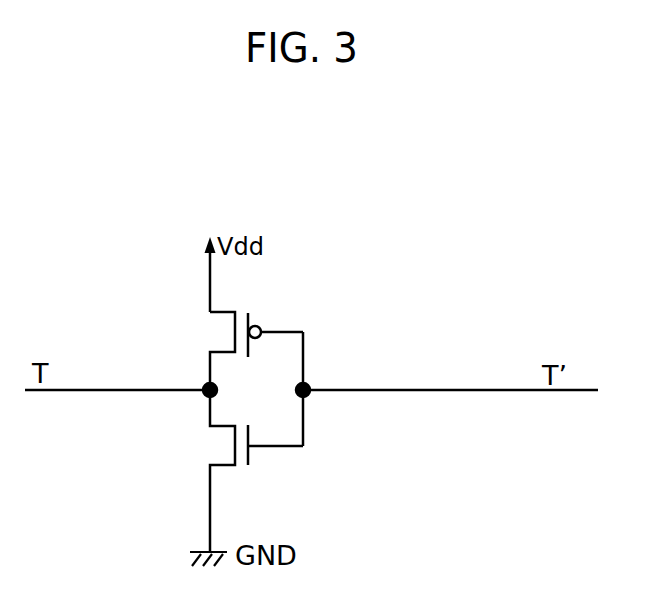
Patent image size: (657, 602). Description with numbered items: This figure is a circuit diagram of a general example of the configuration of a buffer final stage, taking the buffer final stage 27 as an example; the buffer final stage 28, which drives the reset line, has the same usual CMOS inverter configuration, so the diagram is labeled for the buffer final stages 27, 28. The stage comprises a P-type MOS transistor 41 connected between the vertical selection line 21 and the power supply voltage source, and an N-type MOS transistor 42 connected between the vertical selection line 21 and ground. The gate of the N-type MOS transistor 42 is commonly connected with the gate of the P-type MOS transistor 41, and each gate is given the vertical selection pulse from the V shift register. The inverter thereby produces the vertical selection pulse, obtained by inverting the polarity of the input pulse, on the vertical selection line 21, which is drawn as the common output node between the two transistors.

The vertical selection line 21 is at (49, 391).
The buffer final stage 27 is at (555, 290).
The buffer final stage 28 is at (346, 403).
The P-type MOS transistor 41 is at (217, 330).
The N-type MOS transistor 42 is at (217, 444).